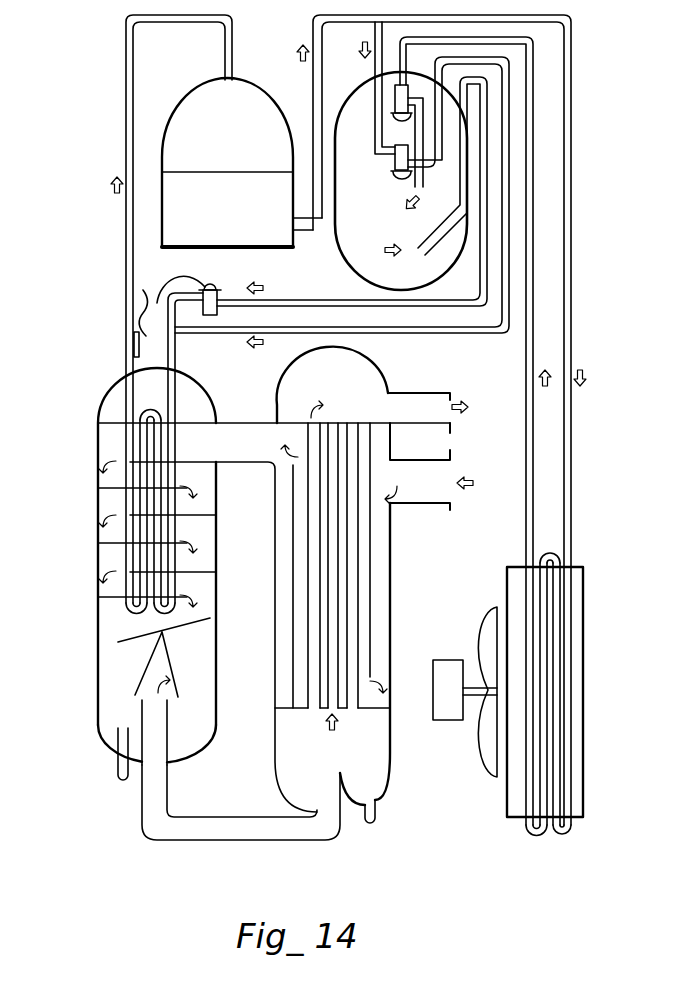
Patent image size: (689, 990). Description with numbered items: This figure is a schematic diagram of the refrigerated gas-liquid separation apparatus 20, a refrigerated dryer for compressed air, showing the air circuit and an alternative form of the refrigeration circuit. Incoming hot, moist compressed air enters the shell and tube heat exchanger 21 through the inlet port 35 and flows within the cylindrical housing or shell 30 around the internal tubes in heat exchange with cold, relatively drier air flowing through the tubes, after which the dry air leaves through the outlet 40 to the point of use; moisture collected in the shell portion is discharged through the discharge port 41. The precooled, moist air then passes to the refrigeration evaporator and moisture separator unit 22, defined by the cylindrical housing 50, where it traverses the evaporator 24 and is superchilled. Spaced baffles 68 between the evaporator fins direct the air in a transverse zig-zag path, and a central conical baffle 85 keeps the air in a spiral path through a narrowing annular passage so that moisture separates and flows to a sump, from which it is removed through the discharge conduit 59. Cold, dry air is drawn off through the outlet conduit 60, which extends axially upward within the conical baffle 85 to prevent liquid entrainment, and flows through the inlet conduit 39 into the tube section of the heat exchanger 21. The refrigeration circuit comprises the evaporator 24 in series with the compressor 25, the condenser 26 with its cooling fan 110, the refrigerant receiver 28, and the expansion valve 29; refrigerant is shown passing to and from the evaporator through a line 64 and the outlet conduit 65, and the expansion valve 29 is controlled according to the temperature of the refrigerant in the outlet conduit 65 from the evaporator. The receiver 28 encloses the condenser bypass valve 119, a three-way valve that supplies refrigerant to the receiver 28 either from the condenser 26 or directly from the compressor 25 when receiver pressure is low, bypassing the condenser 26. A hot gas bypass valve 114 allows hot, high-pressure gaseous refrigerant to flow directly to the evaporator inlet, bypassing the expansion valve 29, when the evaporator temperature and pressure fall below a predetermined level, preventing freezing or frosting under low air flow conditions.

The refrigerated gas-liquid separation apparatus 20 is at (466, 851).
The shell and tube heat exchanger 21 is at (395, 582).
The refrigeration evaporator and moisture separator unit 22 is at (97, 492).
The evaporator 24 is at (97, 547).
The compressor 25 is at (252, 80).
The condenser 26 is at (574, 694).
The refrigerant receiver 28 is at (357, 277).
The expansion valve 29 is at (215, 284).
The cylindrical housing or shell 30 is at (390, 642).
The inlet port 35 is at (438, 478).
The inlet conduit 39 is at (228, 843).
The outlet 40 is at (433, 405).
The discharge port 41 is at (378, 805).
The cylindrical housing 50 is at (98, 728).
The discharge conduit 59 is at (106, 770).
The outlet conduit 60 is at (157, 728).
The conduit 64 is at (176, 350).
The outlet conduit 65 is at (126, 262).
The baffles 68 is at (197, 580).
The central conical baffle 85 is at (173, 662).
The cooling fan 110 is at (480, 772).
The hot gas bypass valve 114 is at (392, 165).
The condenser bypass valve 119 is at (391, 100).